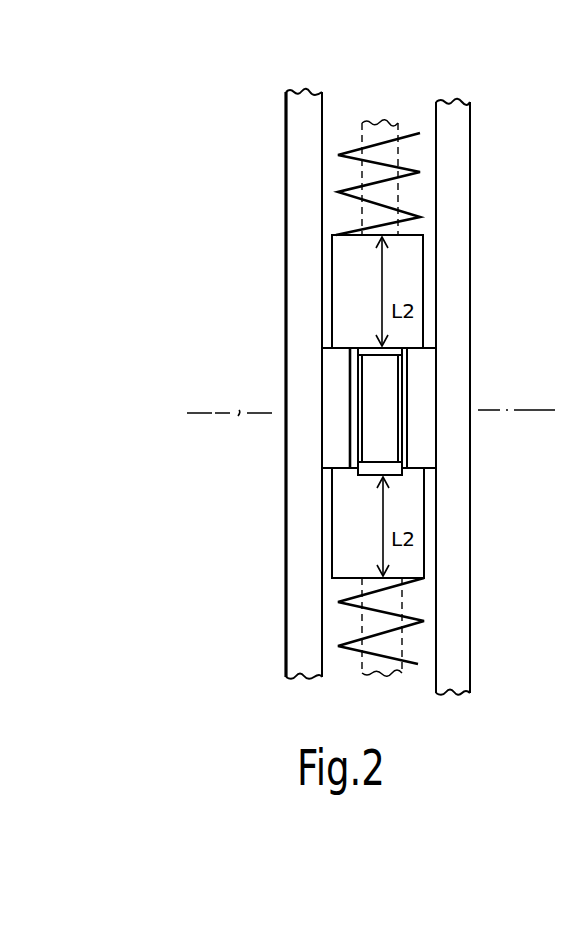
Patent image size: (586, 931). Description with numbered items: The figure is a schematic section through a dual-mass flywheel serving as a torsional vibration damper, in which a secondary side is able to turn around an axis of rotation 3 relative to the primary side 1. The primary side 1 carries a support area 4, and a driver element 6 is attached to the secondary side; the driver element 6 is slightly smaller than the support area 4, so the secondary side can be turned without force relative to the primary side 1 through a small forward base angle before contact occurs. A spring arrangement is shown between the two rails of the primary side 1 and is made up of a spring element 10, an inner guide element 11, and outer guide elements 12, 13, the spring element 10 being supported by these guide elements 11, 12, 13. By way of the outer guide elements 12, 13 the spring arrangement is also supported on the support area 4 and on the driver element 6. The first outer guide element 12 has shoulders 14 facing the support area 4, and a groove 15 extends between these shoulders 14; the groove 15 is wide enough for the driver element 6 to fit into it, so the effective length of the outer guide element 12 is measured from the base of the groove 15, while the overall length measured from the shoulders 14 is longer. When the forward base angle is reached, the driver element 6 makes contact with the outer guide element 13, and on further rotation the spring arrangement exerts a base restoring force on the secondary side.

The primary side 1 is at (284, 112).
The axis of rotation 3 is at (530, 410).
The support area 4 is at (340, 370).
The driver element 6 is at (386, 385).
The spring element 10 is at (340, 190).
The inner guide element 11 is at (392, 612).
The first outer guide element 12 is at (357, 514).
The outer guide element 13 is at (410, 272).
The shoulder 14 is at (341, 465).
The groove 15 is at (358, 480).